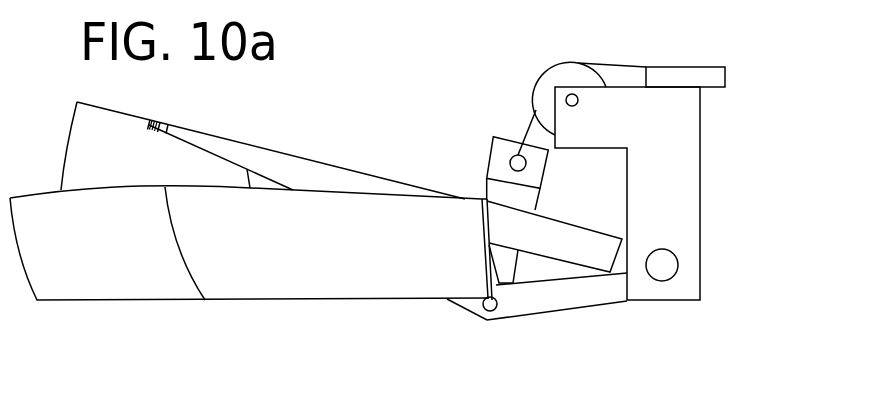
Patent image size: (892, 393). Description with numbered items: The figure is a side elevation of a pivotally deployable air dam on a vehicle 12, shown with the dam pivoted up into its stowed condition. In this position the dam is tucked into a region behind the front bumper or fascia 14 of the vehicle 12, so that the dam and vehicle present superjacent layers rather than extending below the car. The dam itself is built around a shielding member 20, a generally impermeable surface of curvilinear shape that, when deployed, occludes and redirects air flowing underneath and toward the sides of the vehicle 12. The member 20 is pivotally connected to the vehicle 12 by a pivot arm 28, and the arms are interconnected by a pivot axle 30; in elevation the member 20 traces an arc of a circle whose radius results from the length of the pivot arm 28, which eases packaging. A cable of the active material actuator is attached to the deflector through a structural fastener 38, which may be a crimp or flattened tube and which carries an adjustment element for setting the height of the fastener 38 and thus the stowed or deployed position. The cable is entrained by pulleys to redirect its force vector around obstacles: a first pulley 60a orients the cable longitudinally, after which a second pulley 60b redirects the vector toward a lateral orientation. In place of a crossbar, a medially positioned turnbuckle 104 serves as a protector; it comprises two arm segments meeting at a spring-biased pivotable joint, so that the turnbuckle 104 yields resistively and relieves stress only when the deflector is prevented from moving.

The vehicle 12 is at (683, 138).
The front bumper or fascia 14 is at (283, 260).
The shielding member 20 is at (126, 167).
The pivot arm 28 is at (378, 170).
The pivot axle 30 is at (667, 268).
The structural fastener 38 is at (500, 135).
The first pulley 60a is at (553, 62).
The second pulley 60b is at (762, 30).
The turnbuckle 104 is at (538, 326).